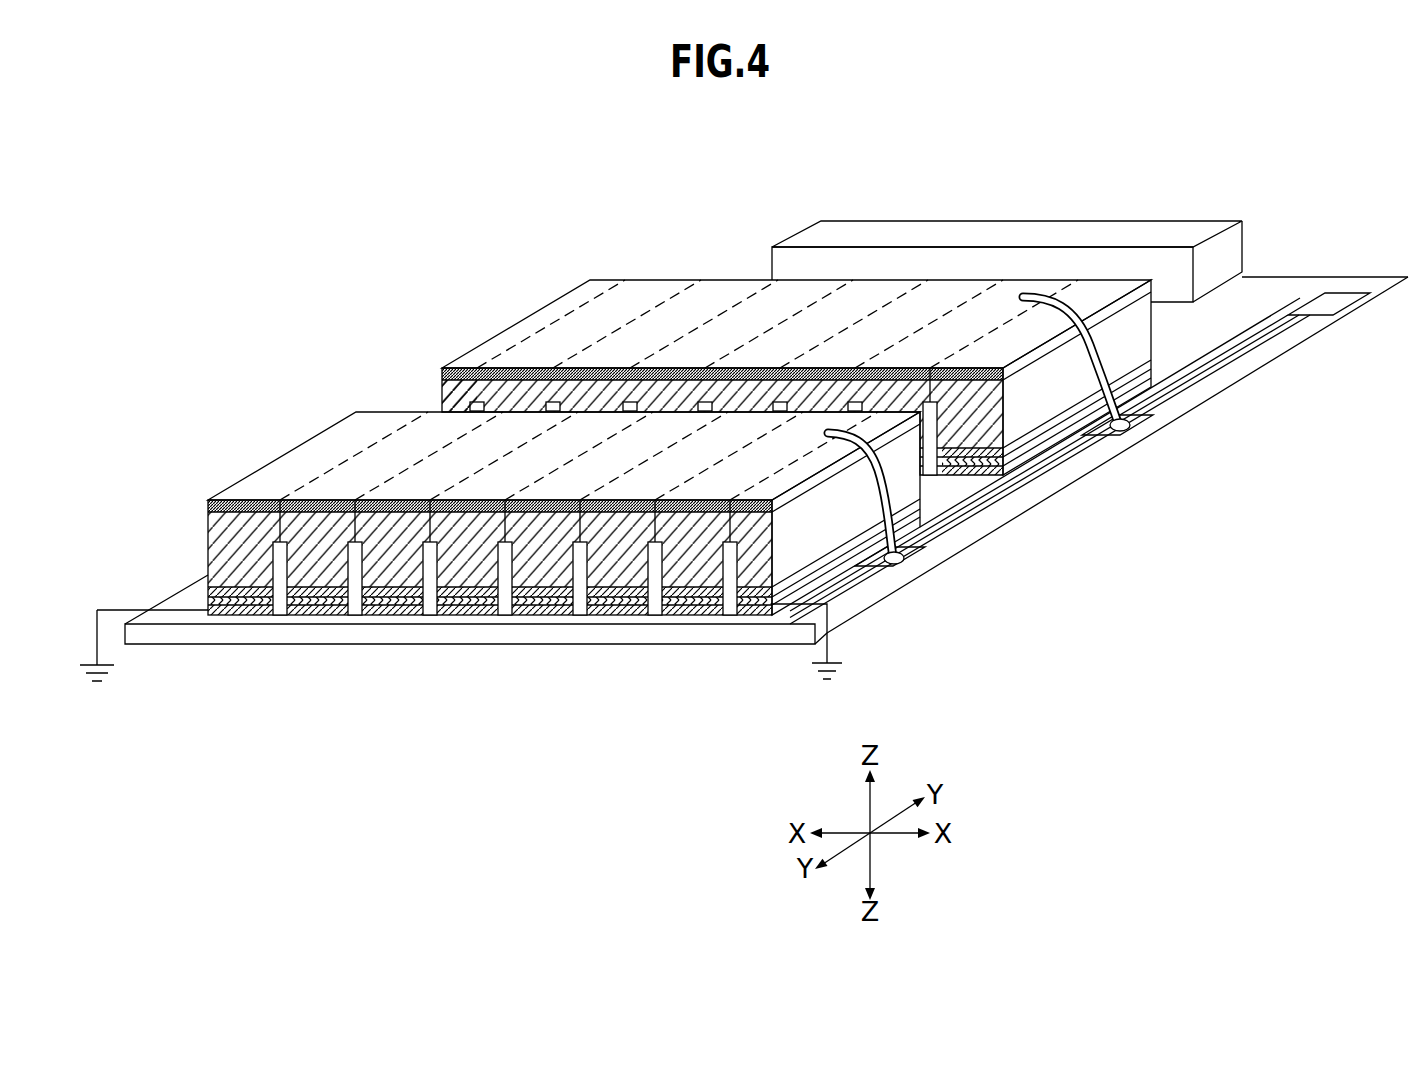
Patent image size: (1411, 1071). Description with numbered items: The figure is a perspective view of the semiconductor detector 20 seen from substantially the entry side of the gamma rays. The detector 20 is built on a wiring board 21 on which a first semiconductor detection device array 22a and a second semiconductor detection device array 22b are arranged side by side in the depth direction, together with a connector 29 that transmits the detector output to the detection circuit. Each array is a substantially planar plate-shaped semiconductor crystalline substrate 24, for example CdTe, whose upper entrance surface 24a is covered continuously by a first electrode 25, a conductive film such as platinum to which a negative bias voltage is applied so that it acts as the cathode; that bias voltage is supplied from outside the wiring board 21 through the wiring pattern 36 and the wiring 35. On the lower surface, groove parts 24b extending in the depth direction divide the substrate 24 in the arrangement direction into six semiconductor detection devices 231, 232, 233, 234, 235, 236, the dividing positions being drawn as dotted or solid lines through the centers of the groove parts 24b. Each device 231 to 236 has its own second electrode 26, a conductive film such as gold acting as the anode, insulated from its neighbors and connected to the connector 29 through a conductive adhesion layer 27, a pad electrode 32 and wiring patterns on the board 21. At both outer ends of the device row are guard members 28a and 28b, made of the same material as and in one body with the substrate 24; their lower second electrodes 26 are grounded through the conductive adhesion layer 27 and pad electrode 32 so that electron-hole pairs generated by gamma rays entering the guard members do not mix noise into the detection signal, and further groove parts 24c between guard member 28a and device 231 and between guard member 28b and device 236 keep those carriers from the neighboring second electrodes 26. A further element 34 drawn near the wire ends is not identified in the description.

The semiconductor detector 20 is at (279, 204).
The wiring board 21 is at (862, 614).
The first semiconductor detection device array 22a is at (270, 446).
The second semiconductor detection device array 22b is at (508, 308).
The semiconductor detection device 231 is at (670, 264).
The semiconductor detection device 232 is at (733, 264).
The semiconductor detection device 233 is at (817, 264).
The semiconductor detection device 234 is at (890, 264).
The semiconductor detection device 235 is at (967, 264).
The semiconductor detection device 236 is at (1042, 264).
The semiconductor crystalline substrate 24 is at (317, 532).
The entrance surface 24a is at (383, 527).
The groove part 24b is at (465, 398).
The groove part 24c is at (280, 615).
The first electrode 25 is at (345, 480).
The second electrode 26 is at (505, 615).
The conductive adhesion layer 27 is at (430, 615).
The guard member 28a is at (238, 632).
The guard member 28b is at (442, 380).
The connector 29 is at (1177, 224).
The pad electrode 32 is at (730, 615).
The pad 34 is at (905, 563).
The wiring 35 is at (1108, 370).
The wiring pattern 36 is at (1272, 333).